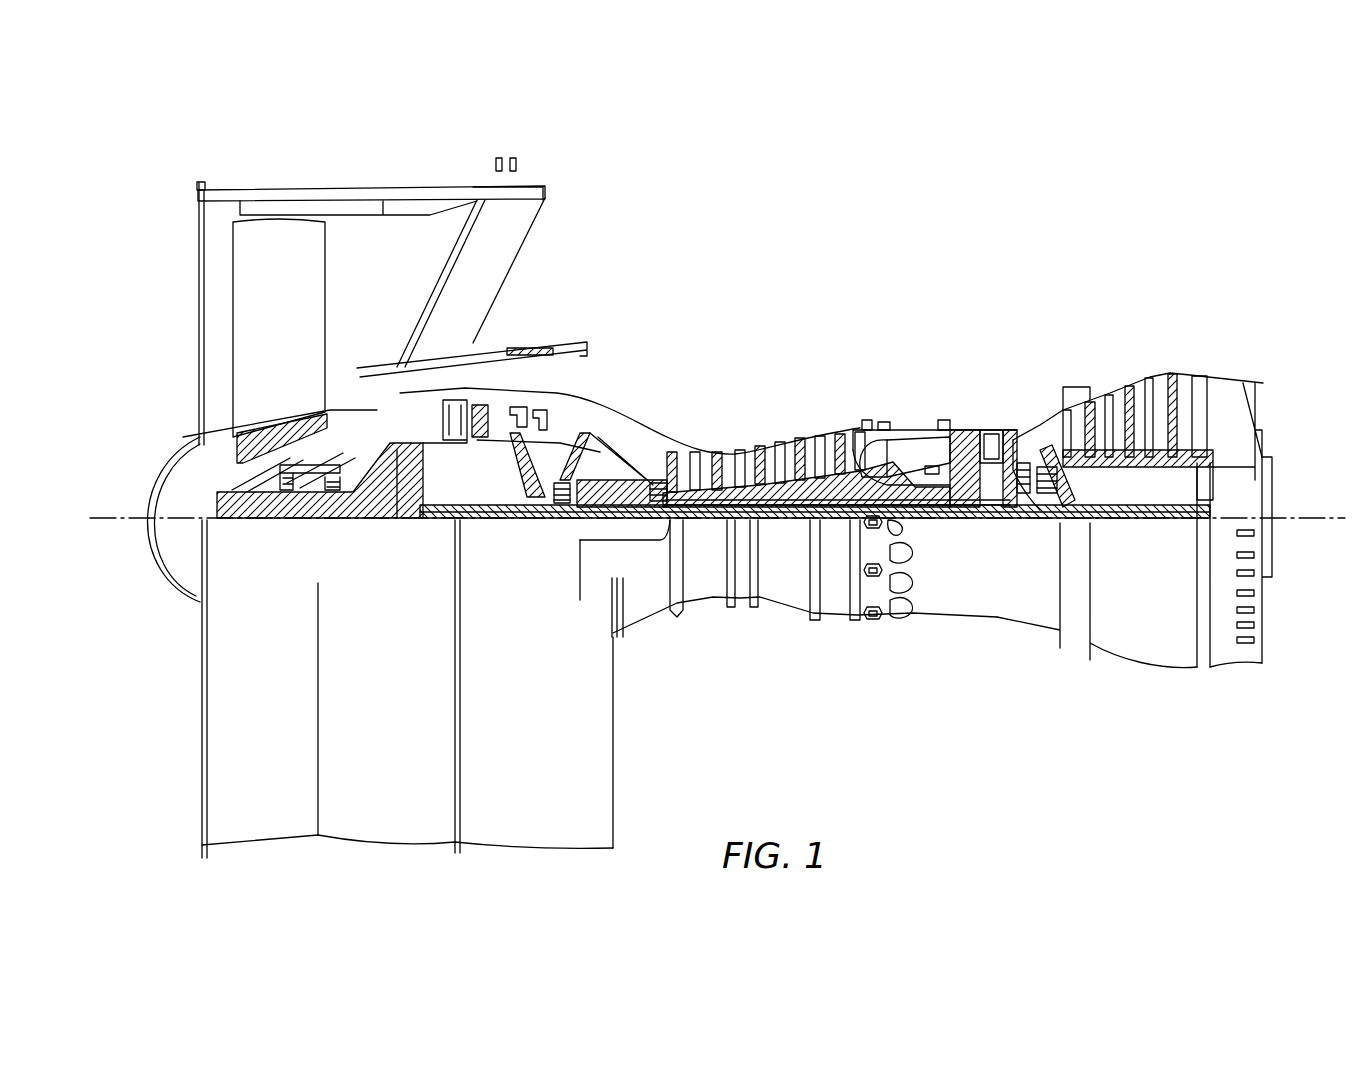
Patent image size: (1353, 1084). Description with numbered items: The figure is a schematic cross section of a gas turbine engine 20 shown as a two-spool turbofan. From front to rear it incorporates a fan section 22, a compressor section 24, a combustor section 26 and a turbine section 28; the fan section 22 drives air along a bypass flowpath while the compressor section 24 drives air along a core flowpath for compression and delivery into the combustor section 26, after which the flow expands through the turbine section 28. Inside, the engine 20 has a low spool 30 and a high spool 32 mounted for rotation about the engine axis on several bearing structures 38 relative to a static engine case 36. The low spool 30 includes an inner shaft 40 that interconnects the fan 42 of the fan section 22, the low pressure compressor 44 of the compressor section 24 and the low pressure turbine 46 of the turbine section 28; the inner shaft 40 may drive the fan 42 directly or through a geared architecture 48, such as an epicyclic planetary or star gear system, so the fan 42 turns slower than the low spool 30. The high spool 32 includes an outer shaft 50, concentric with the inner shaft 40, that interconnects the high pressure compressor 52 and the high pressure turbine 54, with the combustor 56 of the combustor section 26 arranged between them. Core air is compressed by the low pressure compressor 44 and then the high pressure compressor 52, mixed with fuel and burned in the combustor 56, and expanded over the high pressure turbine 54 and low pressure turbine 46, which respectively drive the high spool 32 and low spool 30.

The gas turbine engine 20 is at (948, 231).
The fan section 22 is at (192, 168).
The compressor section 24 is at (462, 322).
The combustor section 26 is at (860, 322).
The turbine section 28 is at (1200, 322).
The low spool 30 is at (790, 523).
The high spool 32 is at (827, 433).
The static engine case 36 is at (838, 617).
The bearing structures 38 is at (278, 530).
The inner shaft 40 is at (710, 522).
The fan 42 is at (268, 370).
The low pressure compressor 44 is at (537, 400).
The low pressure turbine 46 is at (1137, 379).
The geared architecture 48 is at (407, 497).
The outer shaft 50 is at (920, 522).
The high pressure compressor 52 is at (773, 435).
The high pressure turbine 54 is at (990, 427).
The combustor 56 is at (915, 457).